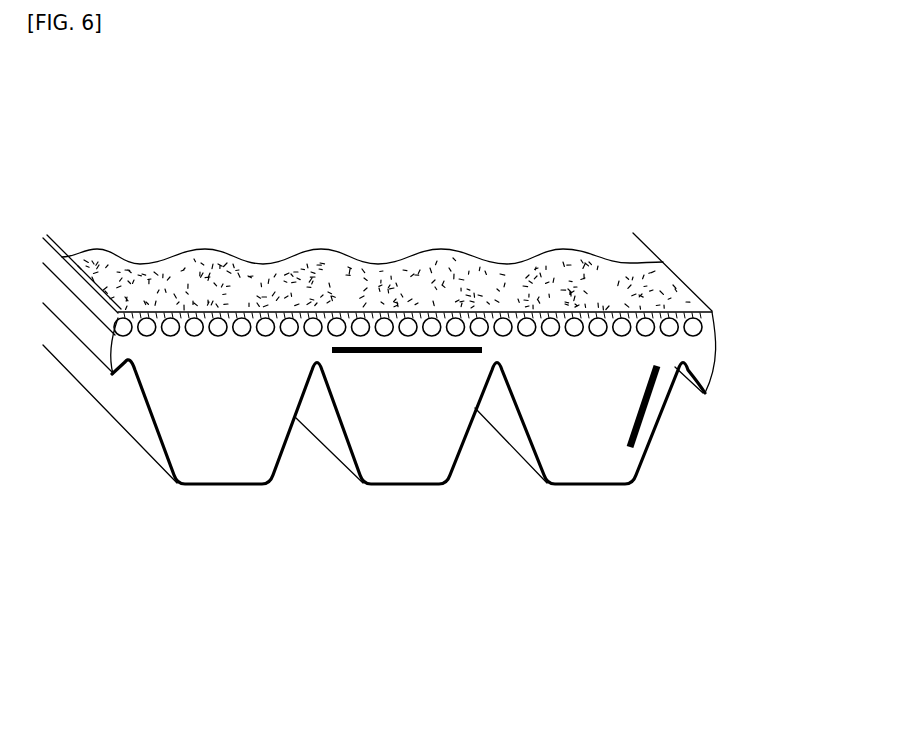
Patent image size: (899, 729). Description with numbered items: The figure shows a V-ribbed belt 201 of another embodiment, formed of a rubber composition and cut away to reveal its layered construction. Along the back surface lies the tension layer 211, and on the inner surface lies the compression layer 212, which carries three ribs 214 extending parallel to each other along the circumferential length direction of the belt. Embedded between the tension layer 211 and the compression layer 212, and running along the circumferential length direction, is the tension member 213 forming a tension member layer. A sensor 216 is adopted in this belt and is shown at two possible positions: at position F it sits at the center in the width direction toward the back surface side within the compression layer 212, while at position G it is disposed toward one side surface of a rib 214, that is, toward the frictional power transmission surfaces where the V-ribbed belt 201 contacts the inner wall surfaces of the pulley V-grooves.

The V-ribbed belt 201 is at (249, 205).
The tension layer 211 is at (712, 312).
The compression layer 212 is at (640, 483).
The tension member 213 is at (698, 324).
The rib 214 is at (223, 470).
The sensor 216 is at (407, 354).